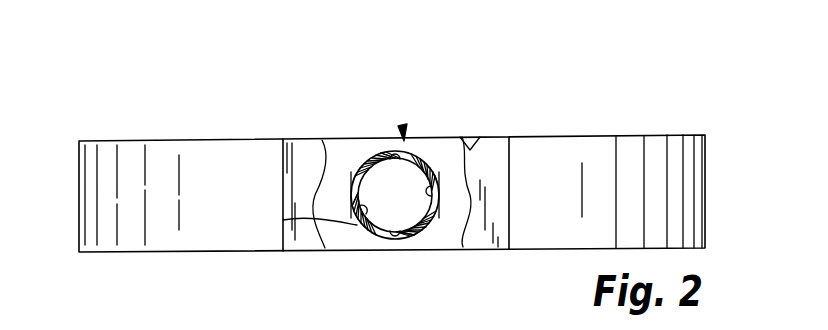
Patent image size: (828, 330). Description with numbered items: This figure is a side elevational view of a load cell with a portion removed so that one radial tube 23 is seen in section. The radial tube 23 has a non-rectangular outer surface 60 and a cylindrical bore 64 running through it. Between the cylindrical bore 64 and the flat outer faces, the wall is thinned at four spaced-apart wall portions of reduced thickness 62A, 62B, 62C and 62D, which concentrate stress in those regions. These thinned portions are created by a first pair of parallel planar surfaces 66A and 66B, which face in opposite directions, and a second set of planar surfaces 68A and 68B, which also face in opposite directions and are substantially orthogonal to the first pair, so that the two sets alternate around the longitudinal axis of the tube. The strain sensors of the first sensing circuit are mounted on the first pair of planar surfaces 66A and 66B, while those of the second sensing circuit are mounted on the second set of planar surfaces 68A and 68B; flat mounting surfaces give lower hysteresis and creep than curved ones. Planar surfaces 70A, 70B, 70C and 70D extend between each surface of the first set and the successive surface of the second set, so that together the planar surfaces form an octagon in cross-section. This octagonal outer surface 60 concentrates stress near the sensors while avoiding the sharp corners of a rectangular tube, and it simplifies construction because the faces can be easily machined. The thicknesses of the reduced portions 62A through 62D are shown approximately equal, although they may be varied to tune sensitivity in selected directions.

The radial tube 23 is at (402, 126).
The non-rectangular outer surface 60 is at (355, 168).
The wall portion of reduced thickness 62A is at (392, 151).
The wall portion of reduced thickness 62B is at (441, 184).
The wall portion of reduced thickness 62C is at (392, 233).
The wall portion of reduced thickness 62D is at (365, 152).
The cylindrical bore 64 is at (362, 228).
The first planar surface 66A is at (385, 150).
The first planar surface 66B is at (420, 231).
The second planar surface 68A is at (443, 178).
The second planar surface 68B is at (348, 183).
The intervening planar surface 70A is at (436, 162).
The intervening planar surface 70B is at (440, 195).
The intervening planar surface 70C is at (350, 203).
The intervening planar surface 70D is at (350, 187).